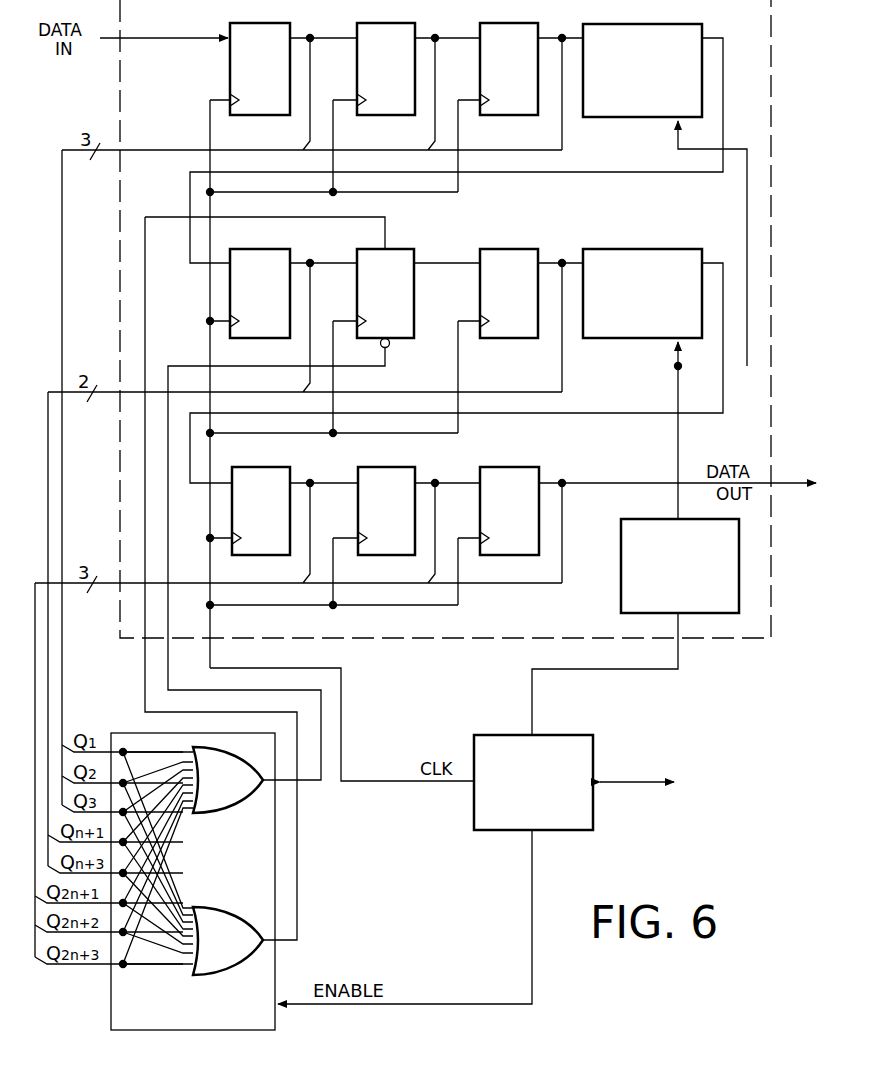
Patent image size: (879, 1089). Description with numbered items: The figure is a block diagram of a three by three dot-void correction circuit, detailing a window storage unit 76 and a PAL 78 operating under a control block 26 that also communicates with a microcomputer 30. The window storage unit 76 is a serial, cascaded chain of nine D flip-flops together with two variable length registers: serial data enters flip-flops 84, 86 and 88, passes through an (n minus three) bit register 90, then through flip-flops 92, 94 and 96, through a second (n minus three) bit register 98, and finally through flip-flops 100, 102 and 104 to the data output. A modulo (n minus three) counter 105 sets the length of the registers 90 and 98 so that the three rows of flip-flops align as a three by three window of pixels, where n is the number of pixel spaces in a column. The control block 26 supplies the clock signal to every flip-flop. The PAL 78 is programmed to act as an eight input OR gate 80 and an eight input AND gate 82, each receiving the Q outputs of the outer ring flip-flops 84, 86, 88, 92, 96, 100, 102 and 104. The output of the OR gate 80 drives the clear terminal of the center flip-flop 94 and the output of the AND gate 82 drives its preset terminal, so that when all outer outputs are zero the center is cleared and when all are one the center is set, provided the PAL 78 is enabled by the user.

The control block 26 is at (596, 740).
The microcomputer 30 is at (690, 785).
The window storage unit 76 is at (118, 110).
The PAL (programmable array logic) 78 is at (135, 732).
The OR gate 80 is at (252, 800).
The AND gate 82 is at (250, 922).
The D flip-flop 84 is at (283, 22).
The D flip-flop 86 is at (402, 22).
The D flip-flop 88 is at (524, 22).
The (n−3) bit variable length D triggered register 90 is at (628, 22).
The D flip-flop 92 is at (280, 248).
The center flip-flop 94 is at (394, 249).
The D flip-flop 96 is at (524, 248).
The (n−3) bit variable length D triggered register 98 is at (630, 248).
The D flip-flop 100 is at (280, 466).
The D flip-flop 102 is at (404, 466).
The D flip-flop 104 is at (528, 466).
The modulo n-3 counter 105 is at (662, 518).